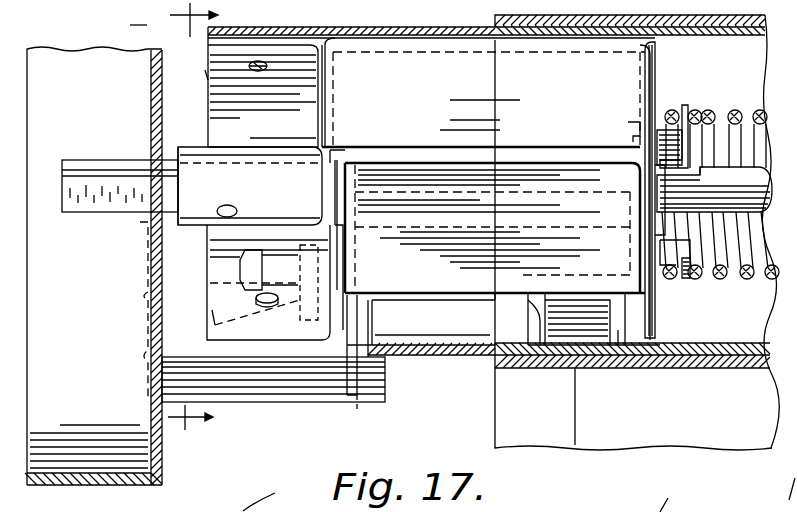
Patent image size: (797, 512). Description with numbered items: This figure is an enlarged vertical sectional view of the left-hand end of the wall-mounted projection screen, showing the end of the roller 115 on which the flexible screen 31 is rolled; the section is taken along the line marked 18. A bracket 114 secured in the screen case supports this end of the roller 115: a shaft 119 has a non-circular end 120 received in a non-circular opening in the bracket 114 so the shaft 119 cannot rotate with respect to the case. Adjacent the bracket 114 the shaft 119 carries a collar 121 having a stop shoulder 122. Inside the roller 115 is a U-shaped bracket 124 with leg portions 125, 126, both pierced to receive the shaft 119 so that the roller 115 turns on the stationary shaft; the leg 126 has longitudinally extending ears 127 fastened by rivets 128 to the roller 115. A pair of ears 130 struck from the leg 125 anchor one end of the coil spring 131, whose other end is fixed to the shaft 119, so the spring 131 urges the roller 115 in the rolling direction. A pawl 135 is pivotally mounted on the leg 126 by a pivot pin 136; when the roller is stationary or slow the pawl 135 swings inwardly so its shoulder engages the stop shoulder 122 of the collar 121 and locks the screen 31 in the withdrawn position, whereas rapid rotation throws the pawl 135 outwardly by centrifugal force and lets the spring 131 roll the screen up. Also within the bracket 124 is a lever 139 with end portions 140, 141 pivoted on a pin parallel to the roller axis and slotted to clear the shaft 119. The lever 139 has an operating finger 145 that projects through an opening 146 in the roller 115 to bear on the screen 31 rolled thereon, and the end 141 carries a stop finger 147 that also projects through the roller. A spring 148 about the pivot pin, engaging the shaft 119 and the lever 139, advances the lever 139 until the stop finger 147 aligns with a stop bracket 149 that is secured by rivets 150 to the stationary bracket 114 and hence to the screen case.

The section line 18- 18 is at (174, 226).
The flexible screen 31 is at (500, 433).
The bracket 114 is at (163, 460).
The roller 115 is at (710, 352).
The shaft 119 is at (762, 258).
The non-circular end 120 is at (96, 172).
The collar 121 is at (192, 153).
The stop shoulder 122 is at (280, 153).
The U-shaped bracket 124 is at (630, 65).
The leg portion 125 is at (655, 92).
The leg portion 126 is at (320, 94).
The ears 127 is at (208, 76).
The rivets 128 is at (256, 72).
The ears 130 is at (690, 142).
The coil spring 131 is at (736, 110).
The pawl 135 is at (146, 356).
The pivot pin 136 is at (282, 270).
The lever 139 is at (448, 286).
The end portion 140 is at (636, 131).
The end portion 141 is at (352, 318).
The operating finger 145 is at (598, 347).
The opening 146 is at (537, 350).
The stop finger 147 is at (360, 425).
The spring 148 is at (345, 202).
The stop bracket 149 is at (312, 394).
The rivets 150 is at (140, 277).